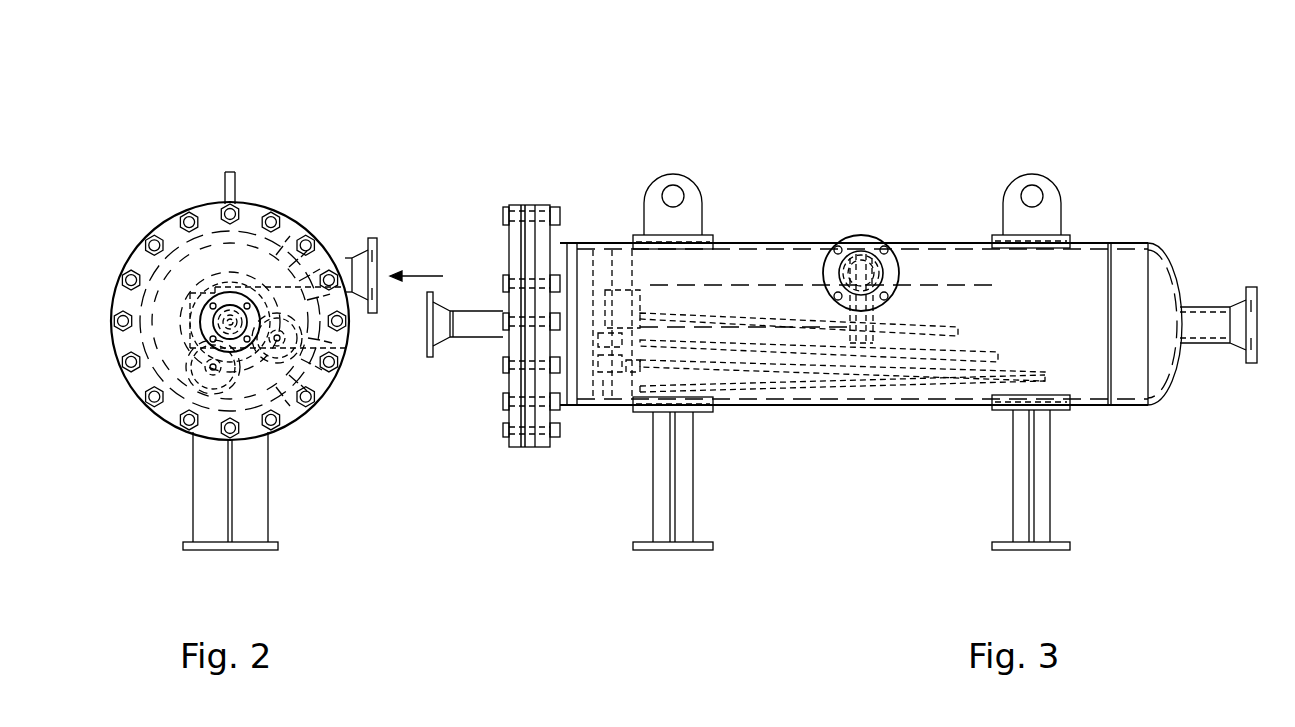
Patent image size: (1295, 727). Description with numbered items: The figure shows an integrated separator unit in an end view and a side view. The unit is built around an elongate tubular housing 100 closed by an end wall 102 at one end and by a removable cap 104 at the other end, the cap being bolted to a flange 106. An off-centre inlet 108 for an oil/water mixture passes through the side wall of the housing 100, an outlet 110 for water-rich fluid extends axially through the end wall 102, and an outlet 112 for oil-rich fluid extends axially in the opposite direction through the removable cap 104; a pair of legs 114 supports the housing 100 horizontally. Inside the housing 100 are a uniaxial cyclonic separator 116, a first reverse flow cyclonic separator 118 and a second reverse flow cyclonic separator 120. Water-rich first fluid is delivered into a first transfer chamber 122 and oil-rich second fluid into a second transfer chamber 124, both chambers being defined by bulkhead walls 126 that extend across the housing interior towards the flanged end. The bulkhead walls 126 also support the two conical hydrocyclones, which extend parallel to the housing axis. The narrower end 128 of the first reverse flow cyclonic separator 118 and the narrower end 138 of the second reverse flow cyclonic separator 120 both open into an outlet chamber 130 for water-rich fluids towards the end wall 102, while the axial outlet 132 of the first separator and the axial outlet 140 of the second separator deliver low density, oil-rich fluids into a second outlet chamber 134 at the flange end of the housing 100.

In FIG. 3, the elongate tubular housing 100 is at (1092, 243).
In FIG. 3, the end wall 102 is at (1165, 285).
In FIG. 2, the removable cap 104 is at (172, 232).
In FIG. 3, the removable cap 104 is at (510, 262).
In FIG. 3, the flange 106 is at (537, 205).
In FIG. 2, the off-centre inlet 108 is at (366, 238).
In FIG. 3, the off-centre inlet 108 is at (861, 258).
In FIG. 3, the outlet for water-rich fluid 110 is at (1204, 333).
In FIG. 3, the outlet for oil-rich fluid 112 is at (460, 328).
In FIG. 2, the legs 114 is at (205, 517).
In FIG. 3, the legs 114 is at (685, 505).
In FIG. 2, the uniaxial cyclonic separator 116 is at (266, 271).
In FIG. 3, the uniaxial cyclonic separator 116 is at (758, 282).
In FIG. 2, the first reverse flow cyclonic separator 118 is at (200, 367).
In FIG. 3, the first reverse flow cyclonic separator 118 is at (830, 387).
In FIG. 2, the second reverse flow cyclonic separator 120 is at (282, 346).
In FIG. 3, the second reverse flow cyclonic separator 120 is at (910, 328).
In FIG. 3, the first transfer chamber 122 is at (625, 258).
In FIG. 3, the second transfer chamber 124 is at (603, 392).
In FIG. 3, the bulkhead walls 126 is at (652, 272).
In FIG. 3, the narrower end 128 is at (1025, 357).
In FIG. 3, the outlet chamber 130 is at (1090, 400).
In FIG. 3, the axial outlet 132 is at (595, 378).
In FIG. 3, the second outlet chamber 134 is at (597, 258).
In FIG. 3, the narrower end 138 is at (958, 327).
In FIG. 3, the axial outlet 140 is at (598, 342).